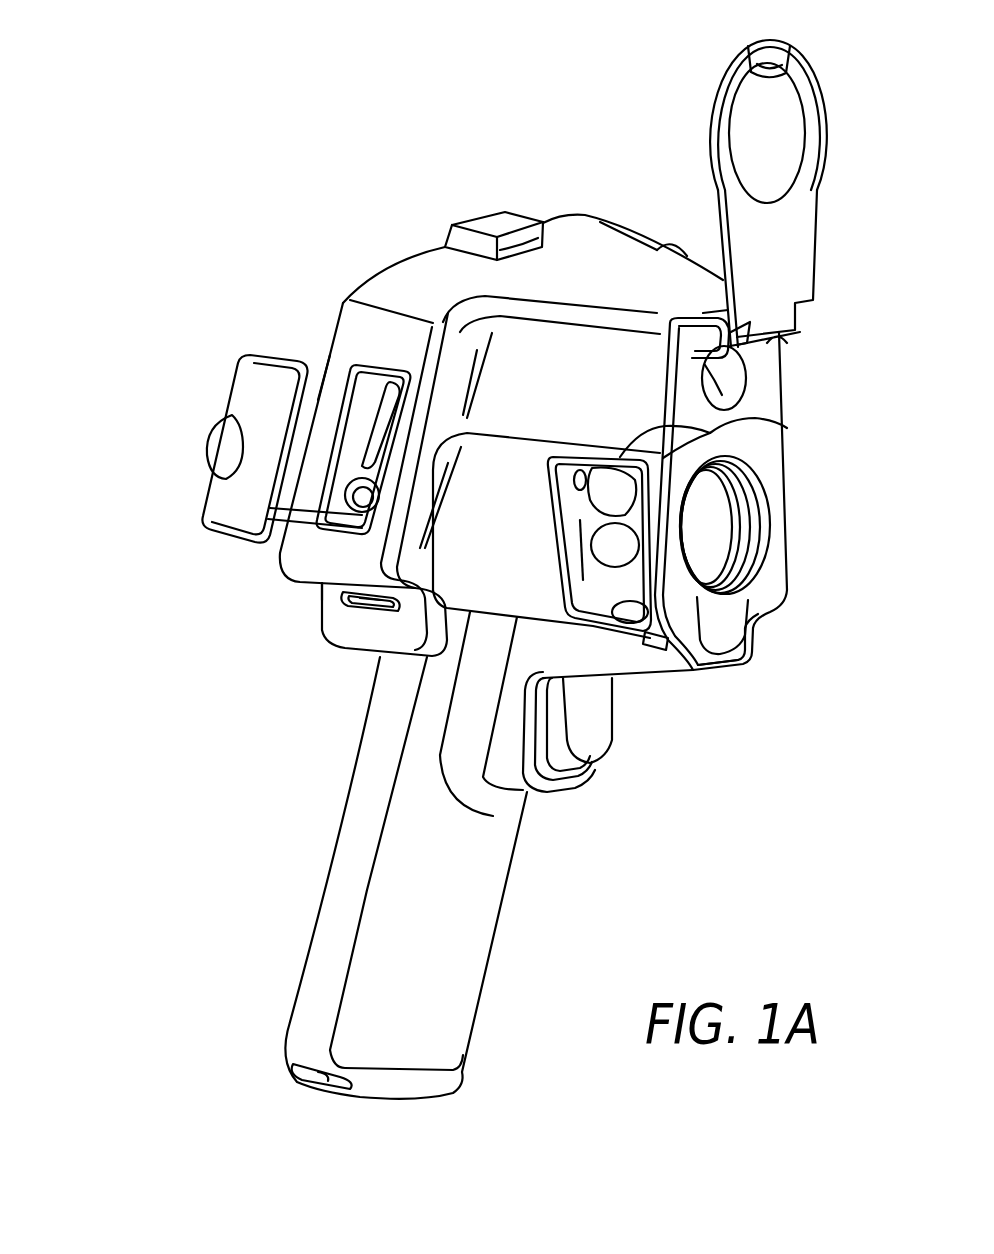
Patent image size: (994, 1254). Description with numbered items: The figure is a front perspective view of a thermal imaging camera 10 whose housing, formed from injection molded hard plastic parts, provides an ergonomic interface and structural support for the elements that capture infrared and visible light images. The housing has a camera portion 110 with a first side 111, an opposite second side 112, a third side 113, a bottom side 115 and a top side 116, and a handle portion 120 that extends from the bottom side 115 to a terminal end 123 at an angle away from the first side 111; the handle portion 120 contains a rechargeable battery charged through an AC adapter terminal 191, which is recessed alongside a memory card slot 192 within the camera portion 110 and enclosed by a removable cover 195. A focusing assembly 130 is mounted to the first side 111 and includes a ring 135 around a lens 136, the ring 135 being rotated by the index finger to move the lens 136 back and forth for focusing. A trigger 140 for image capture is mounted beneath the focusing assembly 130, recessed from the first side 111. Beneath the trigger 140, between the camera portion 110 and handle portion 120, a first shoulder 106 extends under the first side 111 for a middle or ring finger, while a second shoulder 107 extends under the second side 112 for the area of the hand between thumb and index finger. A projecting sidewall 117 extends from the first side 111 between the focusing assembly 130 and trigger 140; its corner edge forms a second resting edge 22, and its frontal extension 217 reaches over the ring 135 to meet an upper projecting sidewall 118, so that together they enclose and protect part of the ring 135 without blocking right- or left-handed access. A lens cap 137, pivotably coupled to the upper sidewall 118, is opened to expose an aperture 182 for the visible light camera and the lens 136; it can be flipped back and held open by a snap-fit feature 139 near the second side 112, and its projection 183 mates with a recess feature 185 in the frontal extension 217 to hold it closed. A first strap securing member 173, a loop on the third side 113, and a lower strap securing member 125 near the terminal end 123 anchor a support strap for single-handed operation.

The thermal imaging camera 10 is at (143, 225).
The second resting edge 22 is at (735, 672).
The first shoulder 106 is at (528, 792).
The second shoulder 107 is at (350, 650).
The camera portion 110 is at (355, 567).
The first side 111 is at (577, 579).
The second side 112 is at (322, 356).
The third side 113 is at (529, 596).
The bottom side 115 is at (472, 684).
The top side 116 is at (565, 258).
The projecting sidewall 117 is at (628, 668).
The upper projecting sidewall 118 is at (636, 357).
The handle portion 120 is at (363, 853).
The terminal end 123 is at (395, 1110).
The lower strap securing member 125 is at (333, 1082).
The focusing assembly 130 is at (648, 641).
The ring 135 is at (690, 428).
The lens 136 is at (708, 530).
The lens cap 137 is at (778, 158).
The feature 139 is at (500, 222).
The trigger 140 is at (592, 744).
The first strap securing member 173 is at (347, 608).
The aperture 182 is at (722, 371).
The projection 183 is at (784, 62).
The feature 185 is at (762, 553).
The AC adapter terminal 191 is at (338, 505).
The memory card slot 192 is at (377, 410).
The removable cover 195 is at (210, 520).
The frontal extension 217 is at (702, 630).